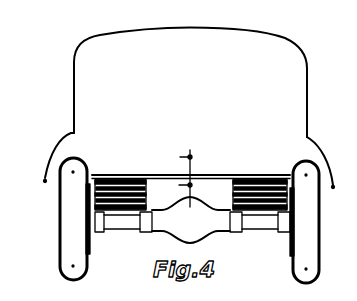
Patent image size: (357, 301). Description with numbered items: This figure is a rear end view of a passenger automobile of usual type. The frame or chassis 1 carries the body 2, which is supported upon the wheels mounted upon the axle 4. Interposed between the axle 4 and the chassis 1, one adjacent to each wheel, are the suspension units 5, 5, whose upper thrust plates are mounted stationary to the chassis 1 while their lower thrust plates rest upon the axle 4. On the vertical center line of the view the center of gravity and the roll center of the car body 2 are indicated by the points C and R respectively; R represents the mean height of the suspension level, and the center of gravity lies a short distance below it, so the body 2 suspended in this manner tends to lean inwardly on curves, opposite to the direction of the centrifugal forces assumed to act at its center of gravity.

The frame or chassis 1 is at (196, 177).
The body 2 is at (94, 40).
The axle 4 is at (263, 230).
The suspension unit 5 is at (125, 176).